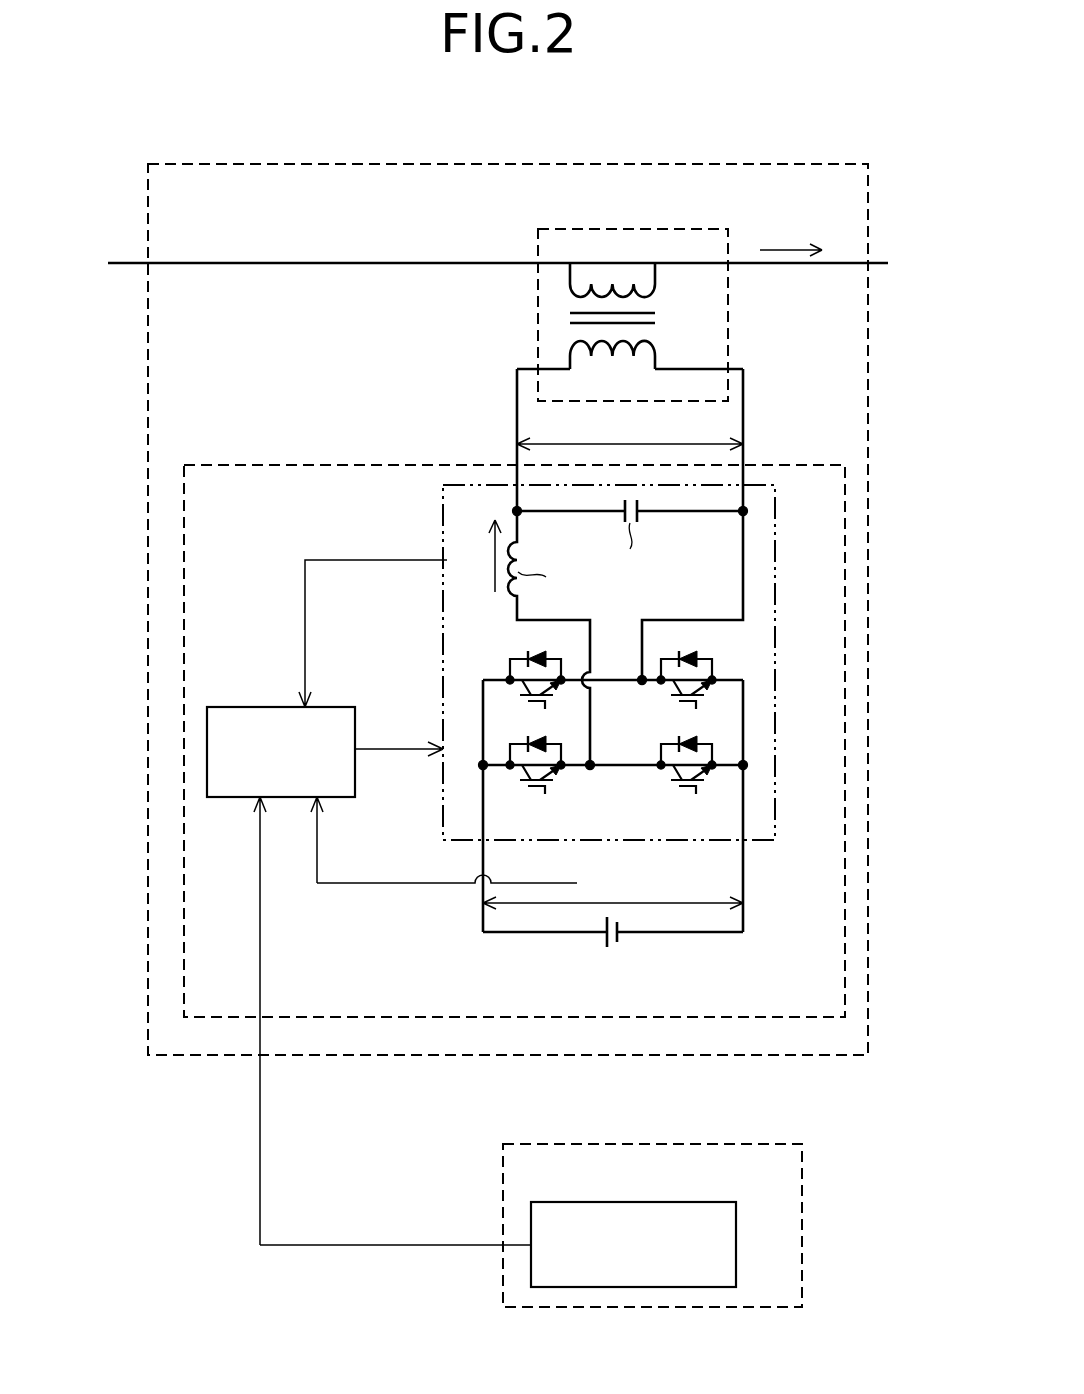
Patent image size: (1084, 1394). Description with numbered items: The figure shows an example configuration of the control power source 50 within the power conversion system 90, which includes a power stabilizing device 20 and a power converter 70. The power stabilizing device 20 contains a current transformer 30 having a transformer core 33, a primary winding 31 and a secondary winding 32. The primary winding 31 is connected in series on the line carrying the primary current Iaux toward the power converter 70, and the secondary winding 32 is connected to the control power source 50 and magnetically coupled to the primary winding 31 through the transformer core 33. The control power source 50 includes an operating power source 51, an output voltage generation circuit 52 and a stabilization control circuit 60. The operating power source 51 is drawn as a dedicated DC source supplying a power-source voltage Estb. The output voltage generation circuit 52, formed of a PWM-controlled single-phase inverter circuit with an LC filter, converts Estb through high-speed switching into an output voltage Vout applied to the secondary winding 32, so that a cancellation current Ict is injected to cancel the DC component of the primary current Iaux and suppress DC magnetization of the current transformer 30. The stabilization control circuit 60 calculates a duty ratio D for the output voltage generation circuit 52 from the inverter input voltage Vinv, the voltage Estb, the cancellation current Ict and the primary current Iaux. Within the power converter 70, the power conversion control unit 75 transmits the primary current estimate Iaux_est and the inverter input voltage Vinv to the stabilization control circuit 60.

The power stabilizing device 20 is at (313, 164).
The current transformer 30 is at (664, 229).
The primary winding 31 is at (655, 290).
The secondary winding 32 is at (655, 343).
The transformer core 33 is at (660, 318).
The control power source 50 is at (287, 465).
The operating power source 51 is at (605, 938).
The output voltage generation circuit 52 is at (443, 822).
The stabilization control circuit 60 is at (233, 707).
The power converter 70 is at (650, 1144).
The power conversion control unit 75 is at (736, 1245).
The power conversion system 90 is at (754, 141).